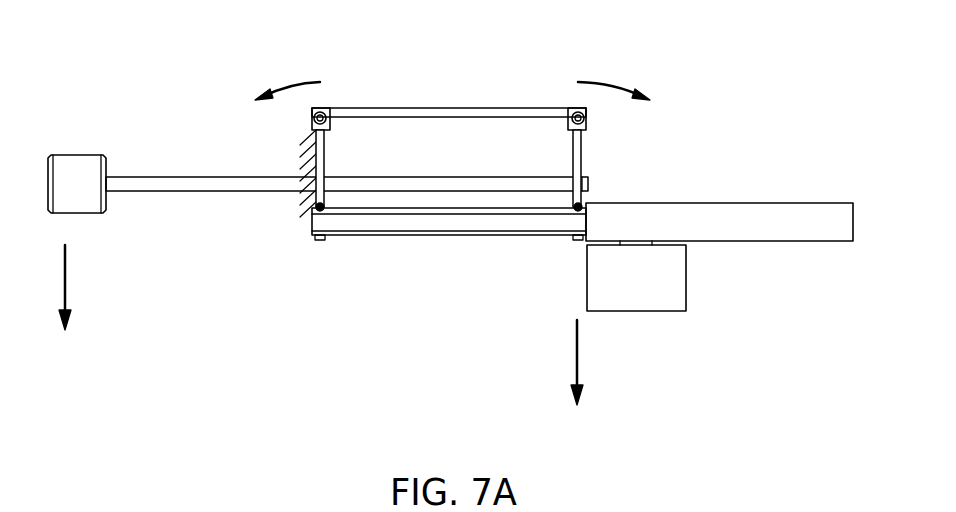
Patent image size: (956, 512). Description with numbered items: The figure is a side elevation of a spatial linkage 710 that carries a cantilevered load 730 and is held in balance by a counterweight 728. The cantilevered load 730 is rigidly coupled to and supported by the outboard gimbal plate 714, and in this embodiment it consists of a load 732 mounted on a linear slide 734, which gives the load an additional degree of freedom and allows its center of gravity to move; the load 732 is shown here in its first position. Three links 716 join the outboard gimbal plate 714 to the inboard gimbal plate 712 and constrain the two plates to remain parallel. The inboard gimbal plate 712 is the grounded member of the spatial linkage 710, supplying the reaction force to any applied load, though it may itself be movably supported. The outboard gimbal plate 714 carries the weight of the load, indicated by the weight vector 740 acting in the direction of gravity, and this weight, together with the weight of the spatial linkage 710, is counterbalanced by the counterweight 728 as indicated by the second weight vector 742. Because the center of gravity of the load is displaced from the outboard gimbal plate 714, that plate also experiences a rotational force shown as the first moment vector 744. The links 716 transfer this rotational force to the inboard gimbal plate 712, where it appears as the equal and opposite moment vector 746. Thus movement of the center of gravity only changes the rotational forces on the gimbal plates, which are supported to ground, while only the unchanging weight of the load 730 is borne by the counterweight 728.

The spatial linkage 710 is at (353, 145).
The inboard gimbal plate 712 is at (324, 163).
The outboard gimbal plate 714 is at (582, 165).
The links 716 is at (440, 107).
The counterweight 728 is at (78, 155).
The cantilevered load 730 is at (719, 229).
The load 732 is at (687, 287).
The linear slide 734 is at (766, 242).
The vector W 740 is at (577, 353).
The second vector W 742 is at (65, 273).
The vector M1 744 is at (615, 82).
The vector M1 746 is at (293, 82).